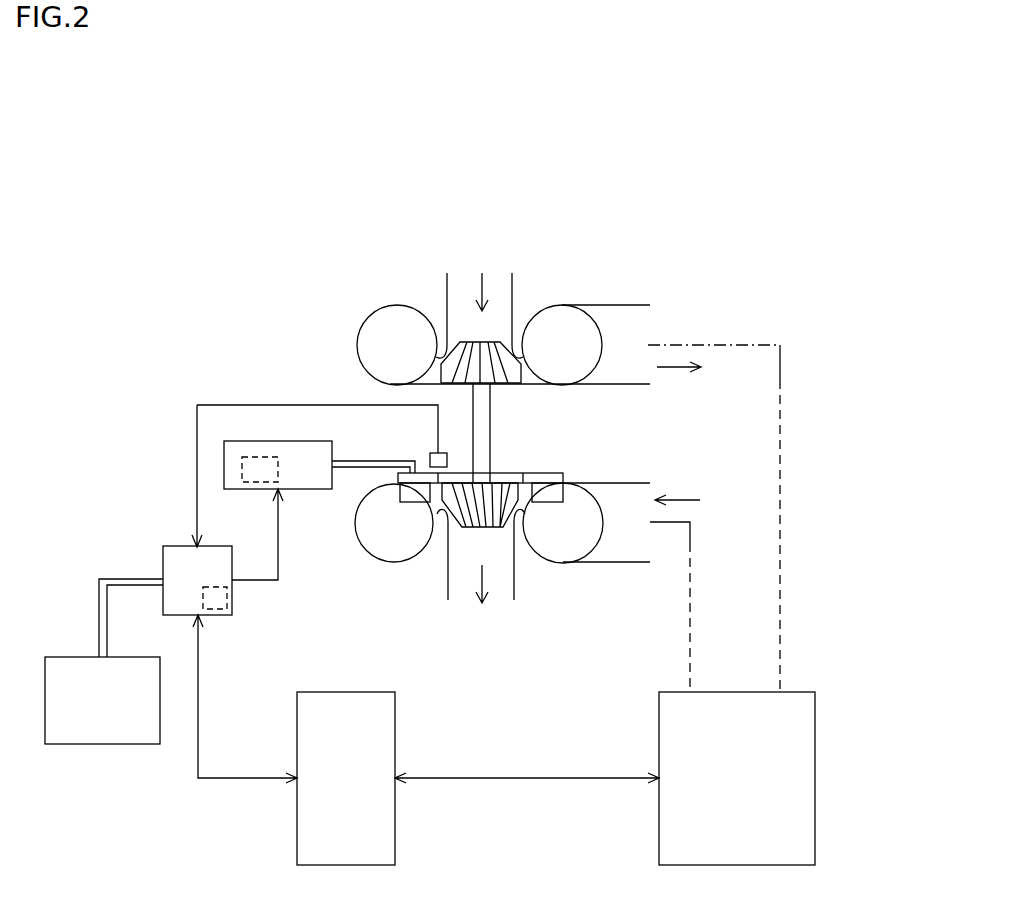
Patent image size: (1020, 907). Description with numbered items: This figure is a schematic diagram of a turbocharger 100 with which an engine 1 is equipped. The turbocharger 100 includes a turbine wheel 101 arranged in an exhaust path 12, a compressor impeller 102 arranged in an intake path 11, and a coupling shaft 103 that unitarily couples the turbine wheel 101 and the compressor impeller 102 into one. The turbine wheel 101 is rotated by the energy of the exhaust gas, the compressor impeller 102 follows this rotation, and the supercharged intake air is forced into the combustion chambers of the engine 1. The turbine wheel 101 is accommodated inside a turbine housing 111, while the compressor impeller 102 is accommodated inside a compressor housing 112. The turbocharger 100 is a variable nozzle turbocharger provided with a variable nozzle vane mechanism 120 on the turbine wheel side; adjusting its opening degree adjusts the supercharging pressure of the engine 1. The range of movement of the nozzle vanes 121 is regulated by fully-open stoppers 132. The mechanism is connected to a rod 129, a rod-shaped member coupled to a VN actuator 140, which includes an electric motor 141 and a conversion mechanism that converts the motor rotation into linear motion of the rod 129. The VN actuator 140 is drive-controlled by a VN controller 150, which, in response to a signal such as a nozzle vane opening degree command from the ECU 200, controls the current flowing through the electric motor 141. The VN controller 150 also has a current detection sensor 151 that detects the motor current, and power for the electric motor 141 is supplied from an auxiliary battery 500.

The engine 1 is at (659, 725).
The intake path 11 is at (782, 618).
The exhaust path 12 is at (690, 632).
The turbocharger 100 is at (348, 337).
The turbine wheel 101 is at (470, 520).
The compressor impeller 102 is at (482, 357).
The coupling shaft 103 is at (490, 410).
The turbine housing 111 is at (370, 550).
The compressor housing 112 is at (378, 308).
The variable nozzle vane mechanism 120 is at (537, 512).
The nozzle vanes 121 is at (563, 495).
The rod 129 is at (365, 460).
The fully-open stoppers 132 is at (447, 458).
The VN actuator 140 is at (247, 490).
The electric motor 141 is at (278, 475).
The VN controller 150 is at (163, 548).
The current detection sensor 151 is at (232, 592).
The ECU 200 is at (395, 733).
The auxiliary battery 500 is at (102, 745).